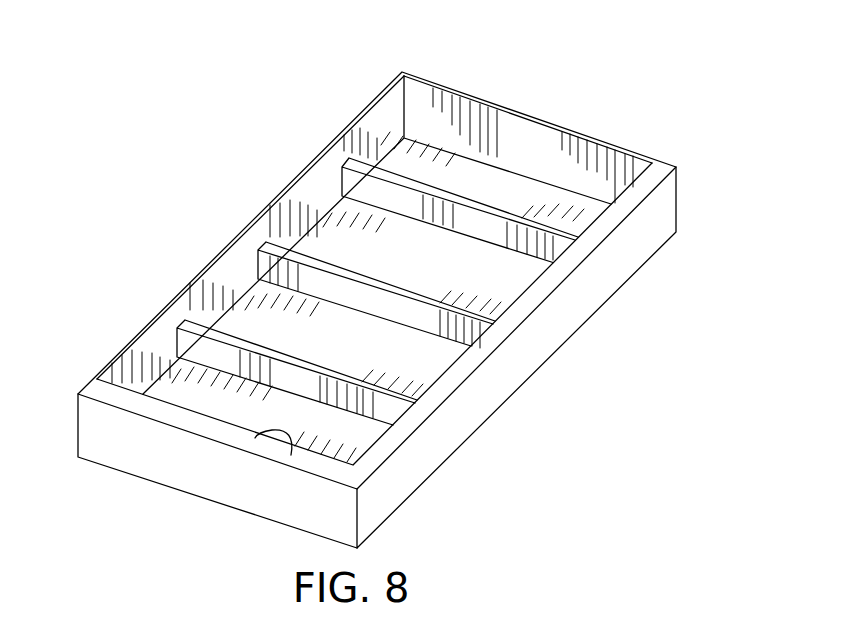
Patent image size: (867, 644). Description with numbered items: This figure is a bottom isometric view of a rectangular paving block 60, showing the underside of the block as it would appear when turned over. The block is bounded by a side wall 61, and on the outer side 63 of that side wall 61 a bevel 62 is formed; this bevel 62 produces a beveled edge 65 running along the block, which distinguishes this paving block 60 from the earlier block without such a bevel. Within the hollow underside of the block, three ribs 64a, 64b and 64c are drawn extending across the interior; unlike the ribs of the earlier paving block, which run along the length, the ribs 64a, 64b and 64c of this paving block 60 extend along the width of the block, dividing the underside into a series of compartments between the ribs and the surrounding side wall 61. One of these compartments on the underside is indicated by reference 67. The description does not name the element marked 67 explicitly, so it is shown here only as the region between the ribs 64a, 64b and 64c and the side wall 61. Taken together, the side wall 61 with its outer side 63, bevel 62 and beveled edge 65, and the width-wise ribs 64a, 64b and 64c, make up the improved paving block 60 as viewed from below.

The paving block 60 is at (240, 229).
The side wall 61 is at (430, 457).
The bevel 62 is at (160, 417).
The outer side 63 is at (200, 477).
The rib 64a is at (185, 320).
The rib 64b is at (498, 323).
The rib 64c is at (582, 243).
The beveled edge 65 is at (291, 455).
The compartment 67 is at (513, 190).